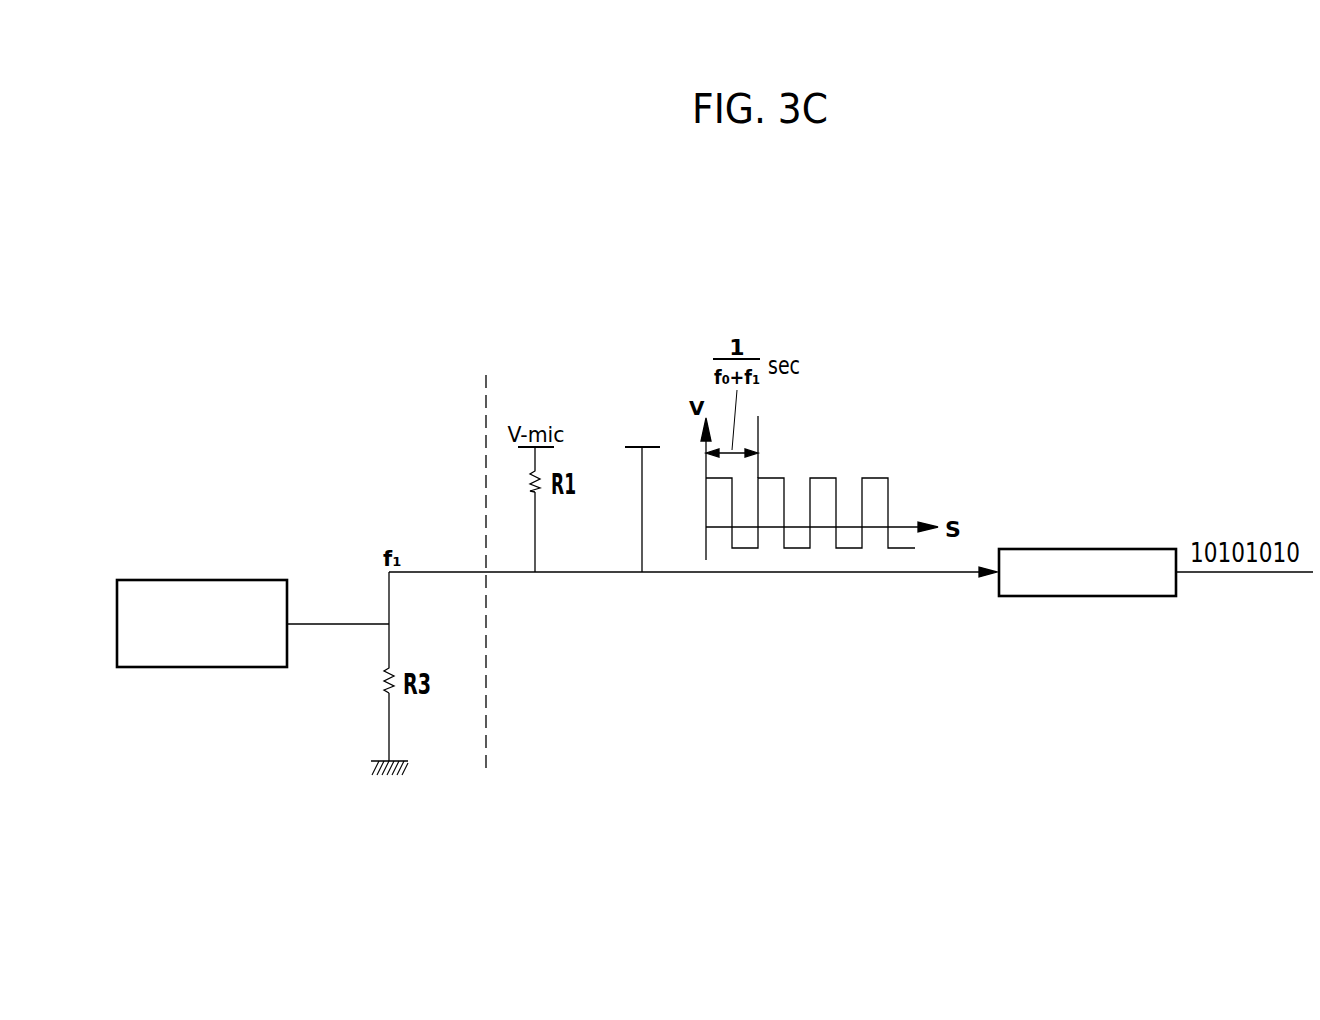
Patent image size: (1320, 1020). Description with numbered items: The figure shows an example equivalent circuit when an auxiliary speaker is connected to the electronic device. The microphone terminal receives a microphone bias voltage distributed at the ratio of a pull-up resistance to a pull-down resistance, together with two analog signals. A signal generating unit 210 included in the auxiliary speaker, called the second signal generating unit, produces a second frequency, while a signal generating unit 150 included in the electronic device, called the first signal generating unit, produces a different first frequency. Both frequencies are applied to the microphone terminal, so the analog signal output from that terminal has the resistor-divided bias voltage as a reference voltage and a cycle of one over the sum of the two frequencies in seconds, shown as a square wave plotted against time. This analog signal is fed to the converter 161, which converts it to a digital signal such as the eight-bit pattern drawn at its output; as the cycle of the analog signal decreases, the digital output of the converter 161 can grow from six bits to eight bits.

The signal generating unit 210 is at (236, 580).
The signal generating unit 150 is at (638, 497).
The converter 161 is at (1057, 549).